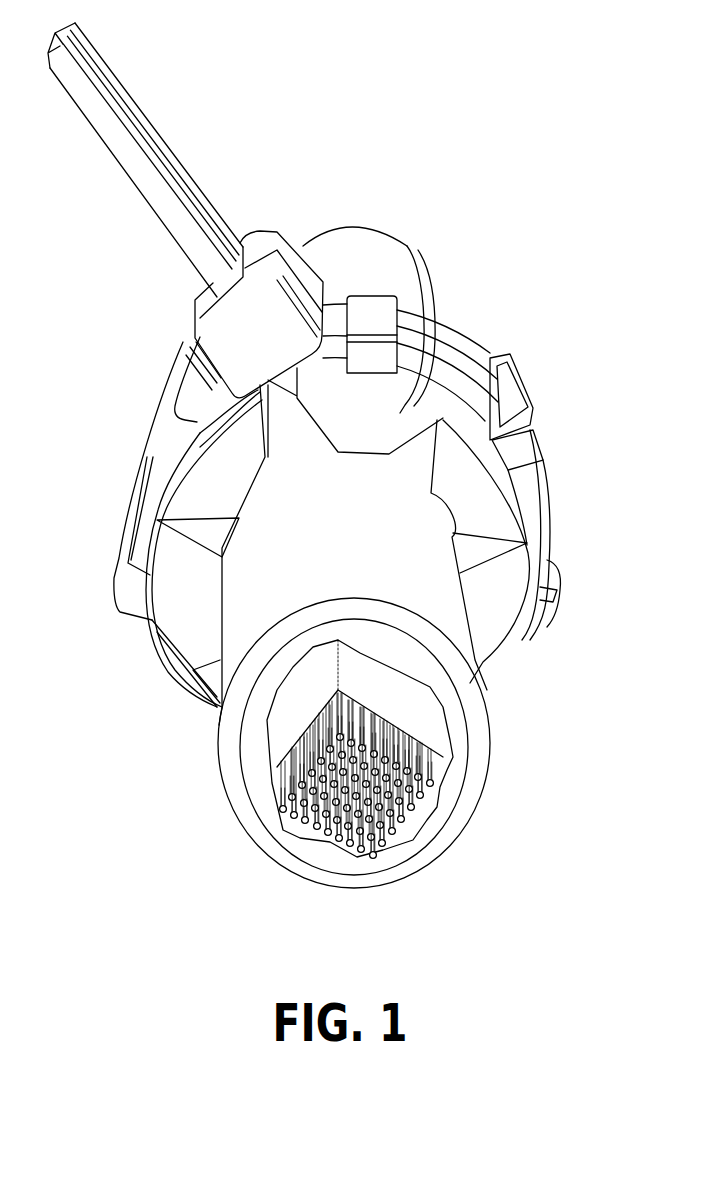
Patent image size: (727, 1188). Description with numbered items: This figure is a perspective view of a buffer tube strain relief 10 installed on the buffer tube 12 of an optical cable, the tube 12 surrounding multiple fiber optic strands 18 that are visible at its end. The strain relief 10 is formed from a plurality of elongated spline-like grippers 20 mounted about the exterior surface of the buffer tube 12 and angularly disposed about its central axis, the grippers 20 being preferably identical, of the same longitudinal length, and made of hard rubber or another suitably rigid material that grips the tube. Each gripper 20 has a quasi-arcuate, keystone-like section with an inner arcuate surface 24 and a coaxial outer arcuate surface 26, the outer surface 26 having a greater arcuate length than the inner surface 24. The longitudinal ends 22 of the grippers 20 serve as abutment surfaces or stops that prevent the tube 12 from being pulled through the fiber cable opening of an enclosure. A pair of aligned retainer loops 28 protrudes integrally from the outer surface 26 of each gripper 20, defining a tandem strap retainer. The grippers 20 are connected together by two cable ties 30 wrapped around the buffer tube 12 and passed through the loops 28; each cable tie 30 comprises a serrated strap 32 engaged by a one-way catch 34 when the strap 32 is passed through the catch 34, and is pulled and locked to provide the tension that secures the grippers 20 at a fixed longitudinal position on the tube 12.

The buffer tube strain relief 10 is at (462, 230).
The buffer tube 12 is at (262, 618).
The fiber optic strands 18 is at (403, 843).
The spline-like grippers 20 is at (545, 466).
The longitudinal ends 22 is at (212, 485).
The inner arcuate surface 24 is at (243, 497).
The outer arcuate surface 26 is at (405, 245).
The retainer loops 28 is at (525, 372).
The cable tie 30 is at (191, 207).
The strap 32 is at (104, 64).
The one-way catch 34 is at (265, 241).